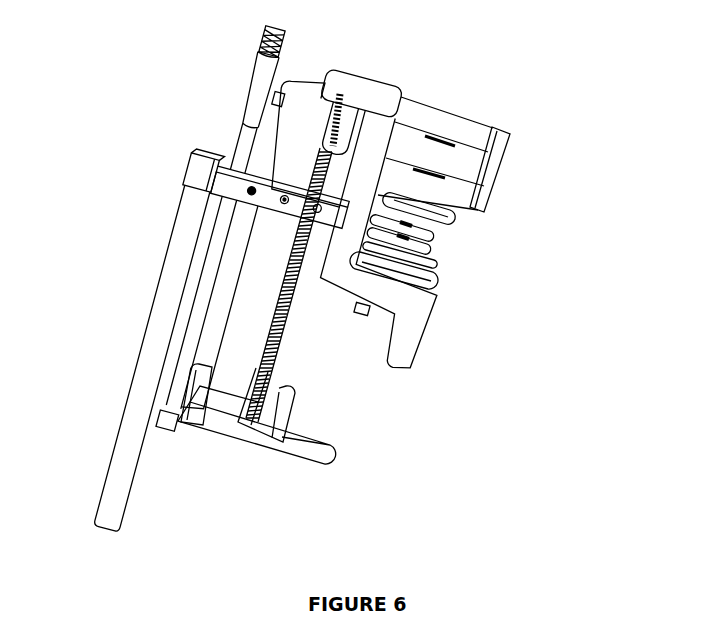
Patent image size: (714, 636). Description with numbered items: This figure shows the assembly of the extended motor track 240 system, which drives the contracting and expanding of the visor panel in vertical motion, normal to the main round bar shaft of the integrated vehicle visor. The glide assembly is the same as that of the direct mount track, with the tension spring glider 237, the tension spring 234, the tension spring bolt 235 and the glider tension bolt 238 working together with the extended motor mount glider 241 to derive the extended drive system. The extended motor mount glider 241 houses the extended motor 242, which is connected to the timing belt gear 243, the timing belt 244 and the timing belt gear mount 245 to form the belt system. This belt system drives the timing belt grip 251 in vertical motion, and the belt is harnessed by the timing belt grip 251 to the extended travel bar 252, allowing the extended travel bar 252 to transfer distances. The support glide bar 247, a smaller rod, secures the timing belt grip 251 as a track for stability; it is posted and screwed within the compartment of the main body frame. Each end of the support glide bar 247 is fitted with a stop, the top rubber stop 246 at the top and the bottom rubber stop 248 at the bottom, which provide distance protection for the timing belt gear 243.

The tension spring 234 is at (433, 240).
The tension spring bolt 235 is at (442, 213).
The tension spring glider 237 is at (438, 278).
The glider tension bolt 238 is at (357, 311).
The extended motor track 240 is at (407, 307).
The extended motor mount glider 241 is at (448, 222).
The extended motor 242 is at (472, 132).
The timing belt gear 243 is at (288, 84).
The timing belt 244 is at (250, 316).
The timing belt gear mount 245 is at (278, 462).
The top rubber stop 246 is at (262, 87).
The support glide bar 247 is at (243, 147).
The bottom rubber stop 248 is at (168, 405).
The timing belt grip 251 is at (208, 172).
The extended travel bar 252 is at (160, 325).